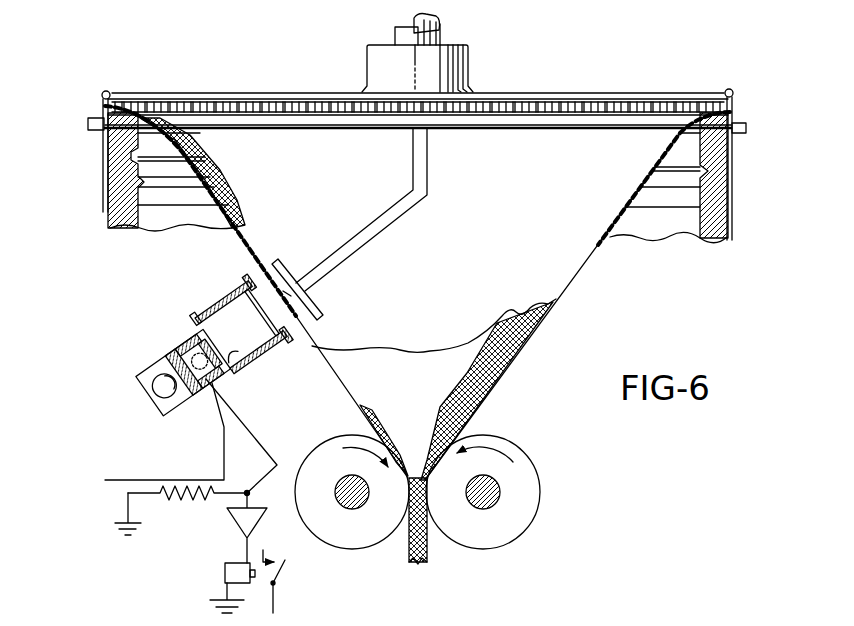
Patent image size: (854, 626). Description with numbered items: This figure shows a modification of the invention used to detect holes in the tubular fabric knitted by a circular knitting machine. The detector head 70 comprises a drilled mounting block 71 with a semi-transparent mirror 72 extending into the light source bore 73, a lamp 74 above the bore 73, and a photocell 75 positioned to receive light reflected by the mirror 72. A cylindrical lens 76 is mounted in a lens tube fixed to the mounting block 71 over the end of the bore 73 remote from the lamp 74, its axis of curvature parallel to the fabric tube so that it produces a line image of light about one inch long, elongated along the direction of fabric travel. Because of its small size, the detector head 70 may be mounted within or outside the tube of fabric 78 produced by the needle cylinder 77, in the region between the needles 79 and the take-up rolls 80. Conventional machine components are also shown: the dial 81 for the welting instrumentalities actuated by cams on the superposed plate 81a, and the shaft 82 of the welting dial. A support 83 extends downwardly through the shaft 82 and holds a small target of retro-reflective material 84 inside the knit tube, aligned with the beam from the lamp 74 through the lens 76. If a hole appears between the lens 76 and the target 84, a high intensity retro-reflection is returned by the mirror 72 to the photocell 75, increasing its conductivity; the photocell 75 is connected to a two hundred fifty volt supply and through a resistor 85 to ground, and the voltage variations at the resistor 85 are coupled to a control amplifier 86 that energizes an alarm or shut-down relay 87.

The detector head 70 is at (194, 360).
The drilled mounting block 71 is at (183, 372).
The semi-transparent mirror 72 is at (196, 363).
The light source bore 73 is at (241, 327).
The lamp 74 is at (164, 385).
The photocell 75 is at (199, 361).
The cylindrical lens 76 is at (283, 323).
The needle cylinder 77 is at (716, 206).
The tube of fabric 78 is at (240, 240).
The needles 79 is at (103, 177).
The take-up rolls 80 is at (368, 543).
The dial 81 is at (527, 123).
The superposed plate 81a is at (560, 100).
The shaft 82 is at (442, 35).
The support 83 is at (412, 20).
The target of retro-reflective material 84 is at (283, 270).
The resistor 85 is at (186, 498).
The control amplifier 86 is at (233, 524).
The alarm or shut-down relay 87 is at (230, 573).